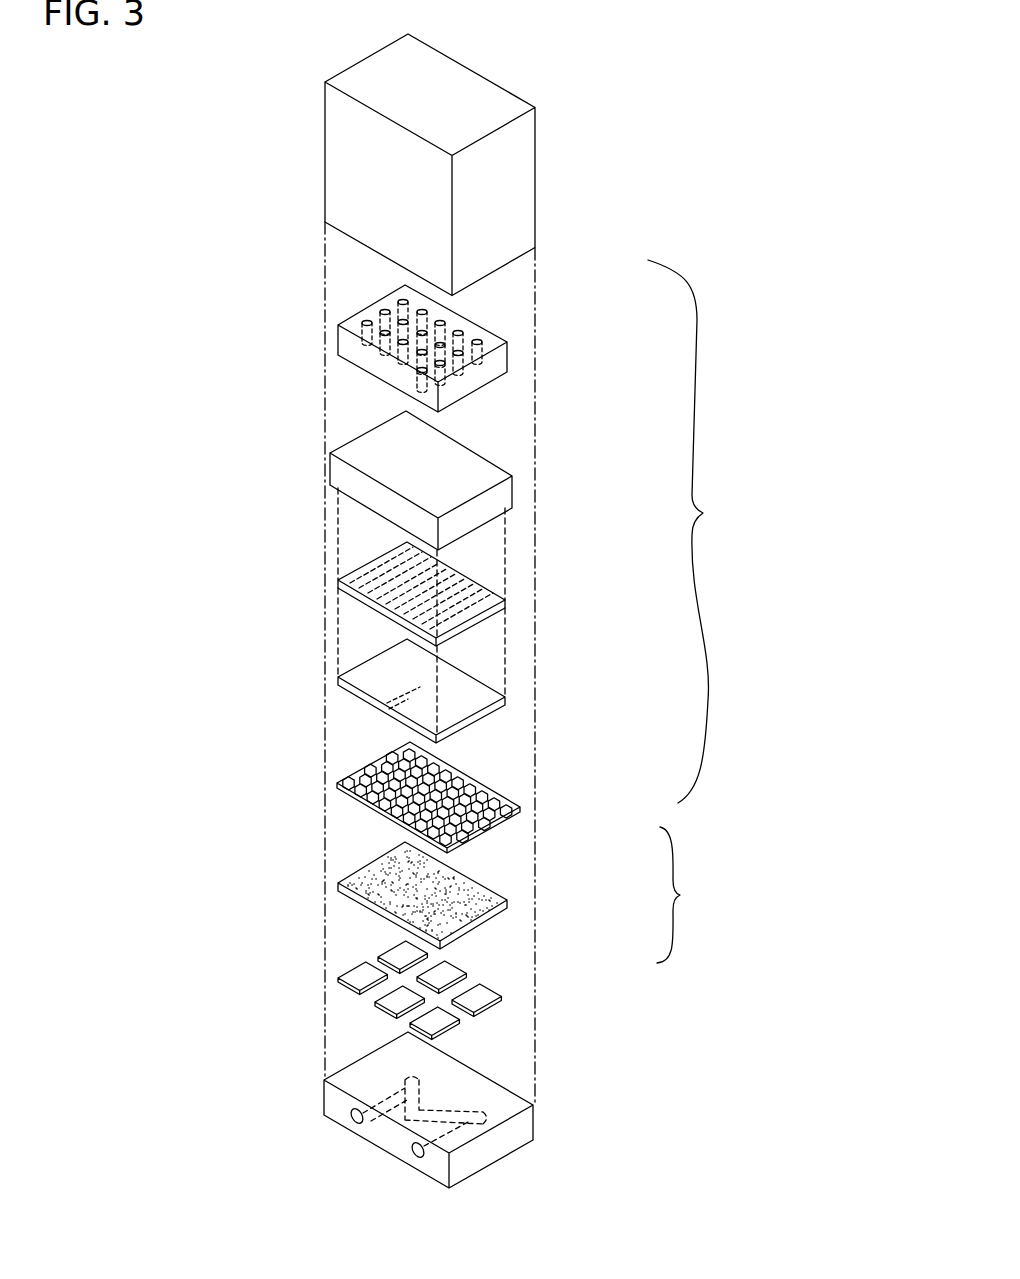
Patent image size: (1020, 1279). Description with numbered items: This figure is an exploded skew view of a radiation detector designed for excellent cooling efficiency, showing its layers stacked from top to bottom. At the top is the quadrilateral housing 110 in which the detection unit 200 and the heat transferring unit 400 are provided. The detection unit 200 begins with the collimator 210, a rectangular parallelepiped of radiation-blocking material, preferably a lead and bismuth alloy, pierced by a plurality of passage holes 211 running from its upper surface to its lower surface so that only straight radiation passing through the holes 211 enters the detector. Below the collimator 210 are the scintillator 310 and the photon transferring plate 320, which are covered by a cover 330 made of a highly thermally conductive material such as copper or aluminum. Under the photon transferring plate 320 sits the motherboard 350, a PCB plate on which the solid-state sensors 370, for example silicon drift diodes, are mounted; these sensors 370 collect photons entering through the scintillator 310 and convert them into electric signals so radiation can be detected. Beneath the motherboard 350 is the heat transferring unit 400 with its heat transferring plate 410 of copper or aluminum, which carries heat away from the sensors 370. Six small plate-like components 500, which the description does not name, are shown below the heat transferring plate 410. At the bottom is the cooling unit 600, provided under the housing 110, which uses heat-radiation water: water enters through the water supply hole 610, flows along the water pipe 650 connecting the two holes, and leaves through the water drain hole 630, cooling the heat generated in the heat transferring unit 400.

The housing 110 is at (515, 193).
The detection unit 200 is at (708, 531).
The collimator 210 is at (503, 360).
The passage holes 211 is at (478, 341).
The cover 330 is at (498, 497).
The scintillator 310 is at (505, 603).
The photon transferring plate 320 is at (503, 706).
The motherboard 350 is at (520, 807).
The solid-state sensors 370 is at (500, 795).
The heat transferring unit 400 is at (689, 895).
The heat transferring plate 410 is at (490, 892).
The sensor chips 500 is at (477, 989).
The cooling unit 600 is at (520, 1130).
The water supply hole 610 is at (352, 1117).
The water drain hole 630 is at (413, 1154).
The water pipe 650 is at (400, 1122).